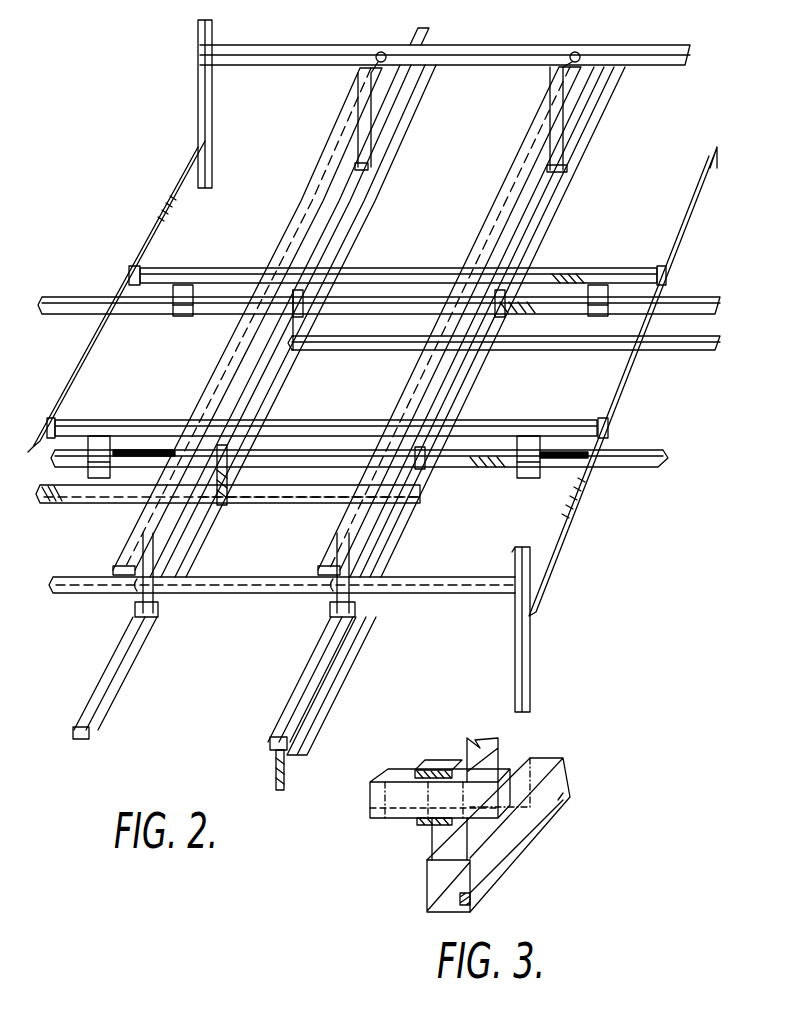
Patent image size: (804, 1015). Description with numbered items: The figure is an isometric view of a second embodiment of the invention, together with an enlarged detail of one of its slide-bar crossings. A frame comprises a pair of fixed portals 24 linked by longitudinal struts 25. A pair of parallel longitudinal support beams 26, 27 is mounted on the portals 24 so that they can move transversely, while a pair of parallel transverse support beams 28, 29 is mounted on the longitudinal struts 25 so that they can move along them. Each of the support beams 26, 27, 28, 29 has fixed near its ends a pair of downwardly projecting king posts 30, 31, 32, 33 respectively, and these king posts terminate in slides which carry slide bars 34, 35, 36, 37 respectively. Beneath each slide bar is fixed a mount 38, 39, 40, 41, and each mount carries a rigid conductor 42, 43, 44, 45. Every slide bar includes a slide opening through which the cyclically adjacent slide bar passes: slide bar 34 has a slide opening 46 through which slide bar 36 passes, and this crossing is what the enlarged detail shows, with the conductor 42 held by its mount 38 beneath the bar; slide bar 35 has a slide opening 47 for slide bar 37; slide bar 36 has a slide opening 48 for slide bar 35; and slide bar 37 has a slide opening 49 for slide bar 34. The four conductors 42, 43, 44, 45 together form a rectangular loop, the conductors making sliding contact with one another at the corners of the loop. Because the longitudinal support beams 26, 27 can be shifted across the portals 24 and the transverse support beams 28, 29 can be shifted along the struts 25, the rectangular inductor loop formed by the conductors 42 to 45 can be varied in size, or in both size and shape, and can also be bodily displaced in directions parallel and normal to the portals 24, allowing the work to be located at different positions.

In FIG. 2, the fixed portals 24 is at (285, 51).
In FIG. 2, the longitudinal struts 25 is at (193, 156).
In FIG. 2, the longitudinal support beam 26 is at (340, 145).
In FIG. 2, the longitudinal support beam 27 is at (535, 135).
In FIG. 2, the transverse support beam 28 is at (70, 422).
In FIG. 2, the transverse support beam 29 is at (167, 272).
In FIG. 2, the king posts 30 is at (370, 123).
In FIG. 2, the king posts 31 is at (567, 130).
In FIG. 2, the king posts 32 is at (98, 449).
In FIG. 2, the king posts 33 is at (186, 292).
In FIG. 2, the slide bar 34 is at (109, 706).
In FIG. 3, the slide bar 34 is at (488, 760).
In FIG. 2, the slide bar 35 is at (297, 698).
In FIG. 2, the slide bar 36 is at (627, 448).
In FIG. 3, the slide bar 36 is at (398, 814).
In FIG. 2, the slide bar 37 is at (81, 301).
In FIG. 2, the mount 38 is at (387, 157).
In FIG. 3, the mount 38 is at (553, 783).
In FIG. 2, the mount 39 is at (328, 702).
In FIG. 2, the mount 40 is at (104, 501).
In FIG. 2, the mount 41 is at (367, 350).
In FIG. 2, the rigid conductor 42 is at (370, 203).
In FIG. 3, the rigid conductor 42 is at (557, 815).
In FIG. 2, the rigid conductor 43 is at (273, 770).
In FIG. 2, the rigid conductor 44 is at (293, 499).
In FIG. 2, the rigid conductor 45 is at (320, 350).
In FIG. 2, the slide opening 46 is at (222, 452).
In FIG. 3, the slide opening 46 is at (423, 773).
In FIG. 2, the slide opening 47 is at (497, 297).
In FIG. 2, the slide opening 48 is at (420, 458).
In FIG. 2, the slide opening 49 is at (303, 295).